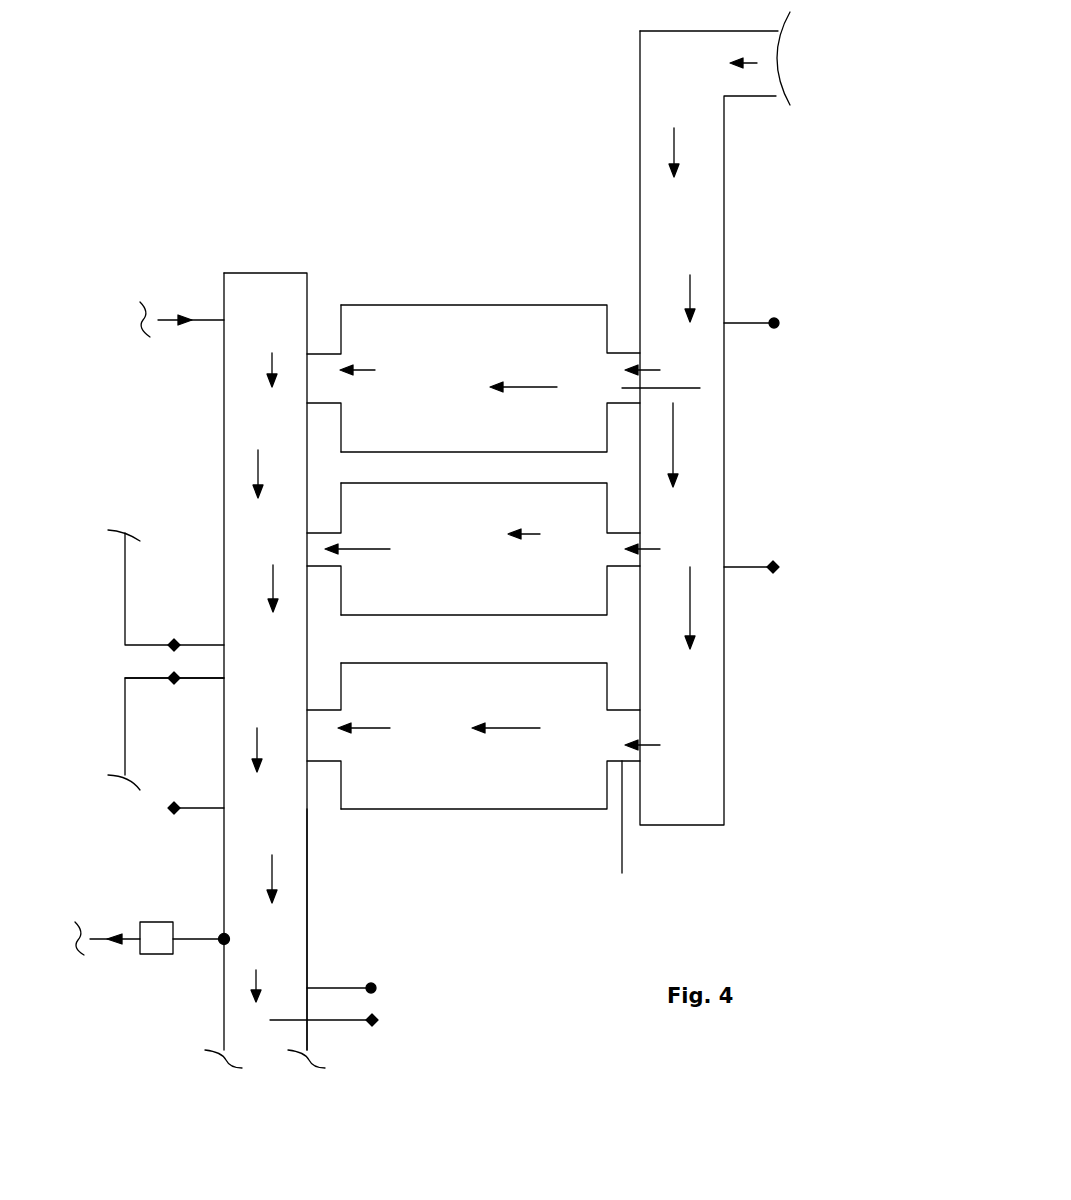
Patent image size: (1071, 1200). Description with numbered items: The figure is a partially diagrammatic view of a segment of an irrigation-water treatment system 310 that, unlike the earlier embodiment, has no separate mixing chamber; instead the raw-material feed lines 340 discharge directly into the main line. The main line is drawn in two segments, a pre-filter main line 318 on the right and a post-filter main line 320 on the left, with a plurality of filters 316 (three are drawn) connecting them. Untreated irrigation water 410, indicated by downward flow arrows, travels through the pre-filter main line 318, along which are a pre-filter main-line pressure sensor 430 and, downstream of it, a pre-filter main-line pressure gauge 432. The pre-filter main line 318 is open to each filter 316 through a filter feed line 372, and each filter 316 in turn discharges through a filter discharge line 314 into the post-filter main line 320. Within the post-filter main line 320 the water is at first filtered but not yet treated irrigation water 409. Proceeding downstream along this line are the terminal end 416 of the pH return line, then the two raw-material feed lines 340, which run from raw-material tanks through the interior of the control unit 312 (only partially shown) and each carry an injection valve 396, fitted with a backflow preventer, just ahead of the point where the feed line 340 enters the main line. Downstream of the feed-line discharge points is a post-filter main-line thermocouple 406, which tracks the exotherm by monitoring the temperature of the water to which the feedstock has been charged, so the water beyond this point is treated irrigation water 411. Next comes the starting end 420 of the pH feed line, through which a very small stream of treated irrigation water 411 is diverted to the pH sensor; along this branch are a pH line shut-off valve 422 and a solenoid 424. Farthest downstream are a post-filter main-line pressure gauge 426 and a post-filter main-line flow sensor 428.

The system 310 is at (234, 86).
The control unit 312 is at (125, 580).
The filter discharge line 314 is at (322, 353).
The filter 316 is at (492, 557).
The pre-filter main line 318 is at (724, 516).
The post-filter main line 320 is at (307, 938).
The raw-material feed line 340 is at (208, 645).
The filter feed line 372 is at (700, 388).
The injection valve 396 is at (174, 680).
The post-filter main-line thermocouple 406 is at (207, 808).
The irrigation water 409 is at (258, 466).
The untreated irrigation water 410 is at (674, 145).
The treated irrigation water 411 is at (307, 865).
The terminal end of the pH return line 416 is at (208, 320).
The starting end of the pH feed line 420 is at (100, 902).
The pH line shut-off valve 422 is at (220, 943).
The solenoid 424 is at (157, 956).
The post-filter main-line pressure gauge 426 is at (340, 986).
The post-filter main-line flow sensor 428 is at (340, 1020).
The pre-filter main-line pressure sensor 430 is at (740, 323).
The pre-filter main-line pressure gauge 432 is at (757, 567).